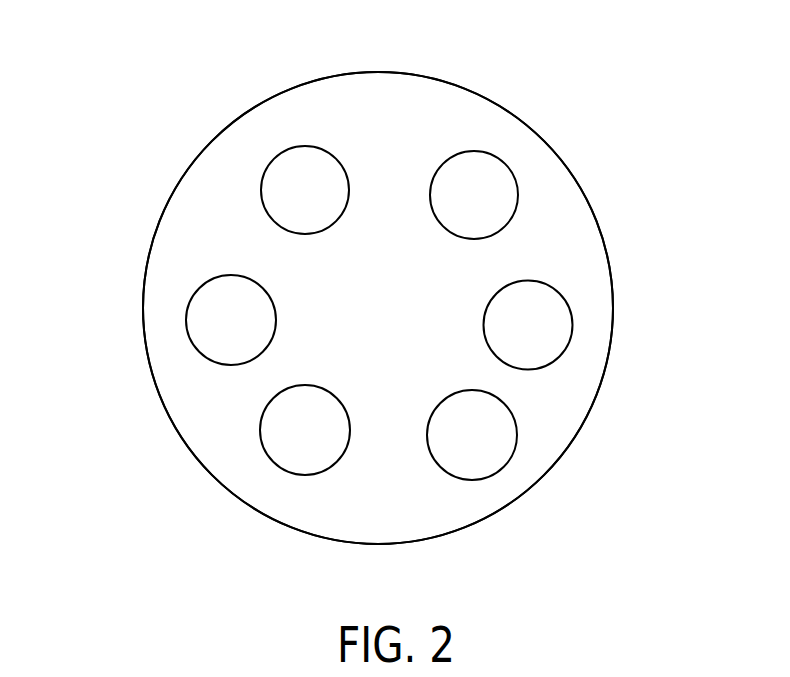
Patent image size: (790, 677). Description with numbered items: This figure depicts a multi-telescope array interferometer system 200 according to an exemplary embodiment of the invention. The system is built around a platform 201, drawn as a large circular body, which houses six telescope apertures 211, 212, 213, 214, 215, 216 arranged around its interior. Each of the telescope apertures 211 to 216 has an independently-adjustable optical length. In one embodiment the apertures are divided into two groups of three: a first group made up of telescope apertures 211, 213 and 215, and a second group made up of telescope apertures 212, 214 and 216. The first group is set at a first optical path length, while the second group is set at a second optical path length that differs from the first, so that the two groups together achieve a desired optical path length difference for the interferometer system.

The multi-telescope array interferometer system 200 is at (558, 74).
The platform 201 is at (382, 71).
The telescope aperture 211 is at (515, 175).
The telescope aperture 212 is at (569, 303).
The telescope aperture 213 is at (517, 435).
The telescope aperture 214 is at (267, 455).
The telescope aperture 215 is at (190, 336).
The telescope aperture 216 is at (273, 158).